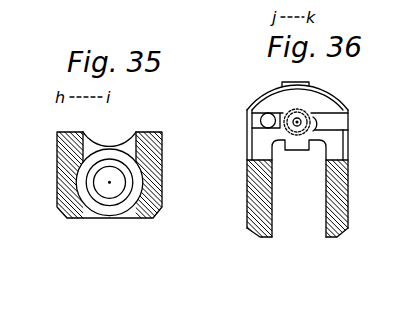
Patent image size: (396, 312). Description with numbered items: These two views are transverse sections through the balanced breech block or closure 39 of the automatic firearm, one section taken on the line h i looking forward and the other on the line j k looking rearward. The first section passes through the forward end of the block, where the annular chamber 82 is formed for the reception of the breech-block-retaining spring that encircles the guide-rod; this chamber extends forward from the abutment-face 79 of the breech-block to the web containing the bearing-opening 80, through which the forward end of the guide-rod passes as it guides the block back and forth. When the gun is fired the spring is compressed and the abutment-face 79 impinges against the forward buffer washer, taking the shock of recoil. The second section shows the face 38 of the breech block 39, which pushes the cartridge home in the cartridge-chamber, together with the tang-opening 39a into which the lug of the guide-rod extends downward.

In FIG. 35, the balanced breech block 39 is at (162, 147).
In FIG. 36, the balanced breech block 39 is at (292, 152).
In FIG. 35, the tang-opening 39a is at (136, 123).
In FIG. 36, the tang-opening 39a is at (318, 180).
In FIG. 36, the face 38 is at (310, 102).
In FIG. 35, the abutment-face 79 is at (109, 207).
In FIG. 35, the bearing-opening 80 is at (102, 194).
In FIG. 35, the annular chamber 82 is at (122, 193).